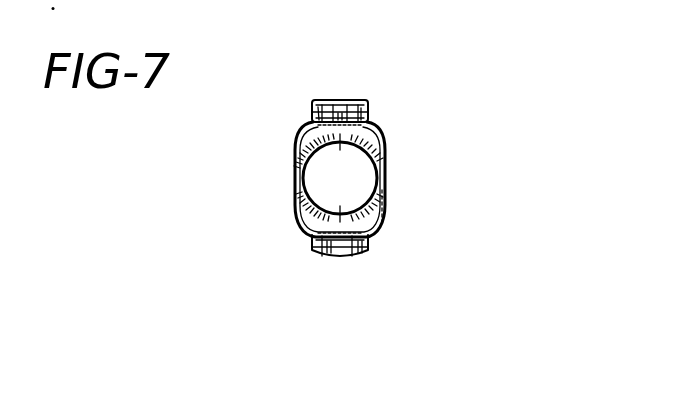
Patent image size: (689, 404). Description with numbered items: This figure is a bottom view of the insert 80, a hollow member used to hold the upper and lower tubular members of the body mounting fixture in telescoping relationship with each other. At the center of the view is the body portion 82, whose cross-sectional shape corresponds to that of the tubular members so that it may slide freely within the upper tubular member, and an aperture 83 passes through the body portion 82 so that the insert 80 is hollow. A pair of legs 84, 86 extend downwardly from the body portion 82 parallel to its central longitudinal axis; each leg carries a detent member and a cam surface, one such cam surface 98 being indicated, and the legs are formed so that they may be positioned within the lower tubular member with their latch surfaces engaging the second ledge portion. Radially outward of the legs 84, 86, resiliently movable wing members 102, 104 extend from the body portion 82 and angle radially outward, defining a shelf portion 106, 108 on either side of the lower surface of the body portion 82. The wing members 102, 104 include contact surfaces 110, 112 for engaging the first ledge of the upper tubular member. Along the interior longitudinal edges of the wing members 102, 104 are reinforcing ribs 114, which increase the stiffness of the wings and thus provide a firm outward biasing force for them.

The insert member 80 is at (371, 104).
The body portion 82 is at (296, 162).
The aperture 83 is at (318, 190).
The leg 84 is at (303, 137).
The leg 86 is at (302, 215).
The cam surface 98 is at (360, 102).
The wing member 102 is at (317, 103).
The wing member 104 is at (373, 251).
The shelf portion 106 is at (355, 260).
The shelf portion 108 is at (386, 216).
The contact surface 110 is at (335, 101).
The contact surface 112 is at (328, 258).
The reinforcing ribs 114 is at (312, 106).